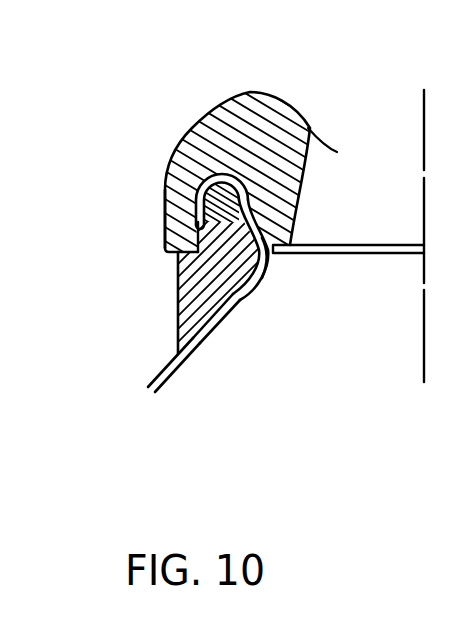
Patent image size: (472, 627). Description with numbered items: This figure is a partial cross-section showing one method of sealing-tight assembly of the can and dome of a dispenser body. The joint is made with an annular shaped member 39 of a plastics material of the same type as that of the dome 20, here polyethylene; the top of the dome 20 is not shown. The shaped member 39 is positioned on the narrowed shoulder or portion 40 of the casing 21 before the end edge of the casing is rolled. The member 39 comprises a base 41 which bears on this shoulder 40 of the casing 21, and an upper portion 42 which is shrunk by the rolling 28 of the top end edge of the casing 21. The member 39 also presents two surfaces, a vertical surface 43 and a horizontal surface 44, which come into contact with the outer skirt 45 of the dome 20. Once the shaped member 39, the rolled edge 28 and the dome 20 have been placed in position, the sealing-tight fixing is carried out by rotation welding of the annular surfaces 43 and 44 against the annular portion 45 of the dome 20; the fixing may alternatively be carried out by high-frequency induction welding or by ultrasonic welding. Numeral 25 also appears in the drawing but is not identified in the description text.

The dome 20 is at (237, 110).
The casing 21 is at (222, 333).
The clip loop outer wall 25 is at (196, 188).
The rolling of the top end edge of the casing 28 is at (233, 176).
The annular shaped member 39 is at (208, 283).
The narrowed shoulder 40 is at (240, 300).
The base 41 is at (203, 318).
The upper portion 42 is at (200, 196).
The vertical surface 43 is at (268, 280).
The horizontal surface 44 is at (178, 272).
The outer skirt 45 is at (163, 242).